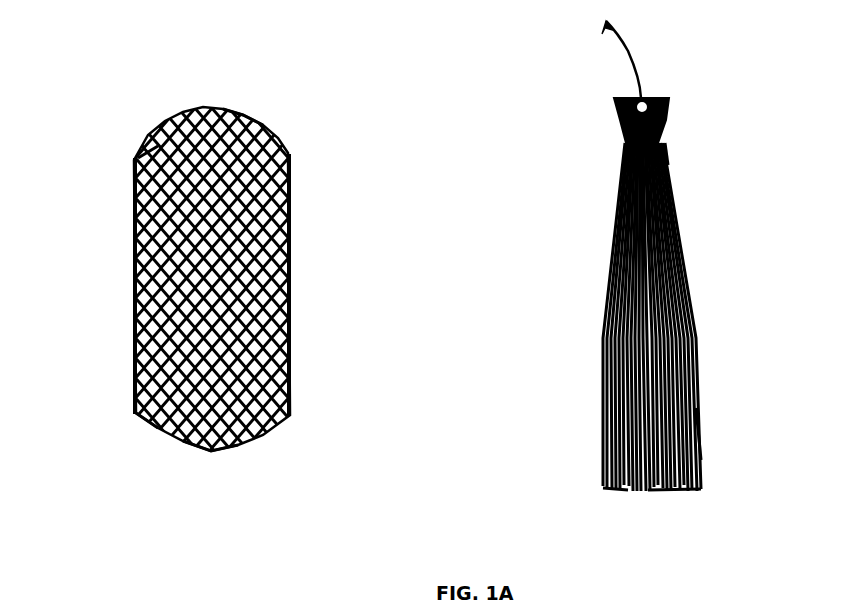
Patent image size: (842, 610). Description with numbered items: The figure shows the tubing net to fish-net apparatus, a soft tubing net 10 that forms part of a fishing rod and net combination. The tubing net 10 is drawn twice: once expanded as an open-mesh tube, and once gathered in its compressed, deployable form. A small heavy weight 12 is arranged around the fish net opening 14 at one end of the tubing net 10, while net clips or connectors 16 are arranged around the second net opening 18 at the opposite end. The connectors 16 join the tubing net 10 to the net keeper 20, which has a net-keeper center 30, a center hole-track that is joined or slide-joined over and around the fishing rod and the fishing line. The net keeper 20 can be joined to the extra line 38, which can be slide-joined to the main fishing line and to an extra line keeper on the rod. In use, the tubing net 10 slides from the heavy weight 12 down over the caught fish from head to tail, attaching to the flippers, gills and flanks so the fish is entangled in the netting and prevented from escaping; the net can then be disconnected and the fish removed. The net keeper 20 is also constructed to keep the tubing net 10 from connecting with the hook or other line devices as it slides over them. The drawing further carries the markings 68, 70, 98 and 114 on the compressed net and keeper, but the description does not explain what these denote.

The tubing net 10 is at (283, 270).
The small heavy weight 12 is at (260, 427).
The fish net opening 14 is at (148, 423).
The net clip or connector 16 is at (240, 115).
The second net opening 18 is at (137, 142).
The net keeper 20 is at (660, 103).
The net-keeper center 30 is at (650, 88).
The extra line 38 is at (620, 43).
The constraining sheath 68 is at (693, 452).
The sheath proximal end 70 is at (660, 157).
The hub 98 is at (620, 88).
The radiopaque marker 114 is at (622, 113).